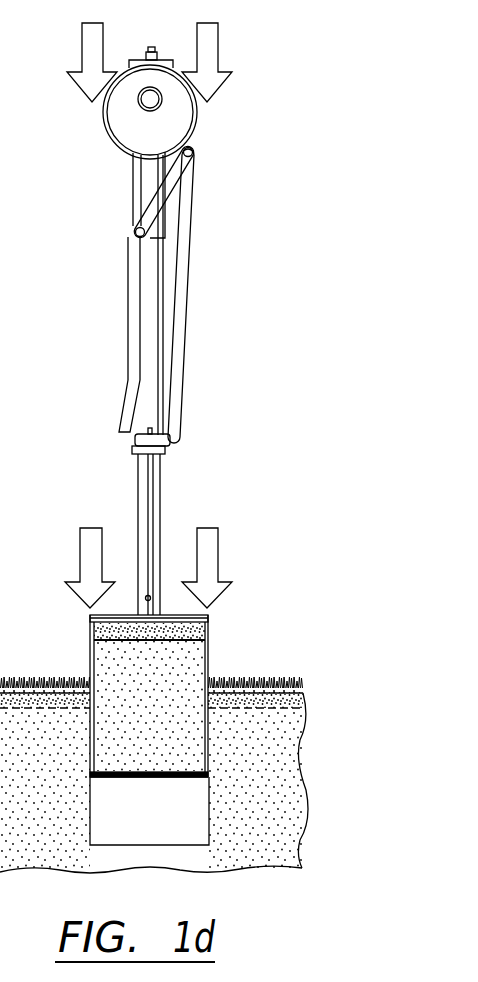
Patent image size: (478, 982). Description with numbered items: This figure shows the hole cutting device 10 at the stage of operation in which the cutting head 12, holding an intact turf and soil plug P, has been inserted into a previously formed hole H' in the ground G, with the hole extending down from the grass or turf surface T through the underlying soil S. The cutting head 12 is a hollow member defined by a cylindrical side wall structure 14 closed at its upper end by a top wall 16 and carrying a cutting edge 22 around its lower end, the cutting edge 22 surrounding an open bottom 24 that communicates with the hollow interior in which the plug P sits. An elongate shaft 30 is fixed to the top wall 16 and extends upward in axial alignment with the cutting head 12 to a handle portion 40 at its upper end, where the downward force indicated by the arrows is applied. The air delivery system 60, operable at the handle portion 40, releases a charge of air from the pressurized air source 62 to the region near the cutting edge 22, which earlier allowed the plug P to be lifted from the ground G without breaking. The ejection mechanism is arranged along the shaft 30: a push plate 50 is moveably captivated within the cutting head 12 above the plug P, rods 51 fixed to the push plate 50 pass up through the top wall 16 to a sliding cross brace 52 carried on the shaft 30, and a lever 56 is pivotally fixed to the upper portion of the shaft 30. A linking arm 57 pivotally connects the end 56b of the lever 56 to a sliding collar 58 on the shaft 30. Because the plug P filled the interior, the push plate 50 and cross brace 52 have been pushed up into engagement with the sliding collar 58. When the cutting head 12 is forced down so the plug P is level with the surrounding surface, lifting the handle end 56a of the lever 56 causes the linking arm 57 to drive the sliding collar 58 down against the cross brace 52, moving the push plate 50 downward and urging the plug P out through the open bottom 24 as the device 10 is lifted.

The hole cutting device 10 is at (262, 127).
The hollow cutting head 12 is at (215, 628).
The side wall structure 14 is at (90, 652).
The top wall 16 is at (180, 615).
The cutting edge 22 is at (110, 773).
The open bottom 24 is at (128, 773).
The elongate shaft 30 is at (150, 368).
The handle portion 40 is at (140, 113).
The push plate 50 is at (125, 630).
The rods 51 is at (148, 503).
The sliding cross brace 52 is at (160, 448).
The lever 56 is at (128, 300).
The handle end of the lever 56a is at (125, 405).
The end of the lever 56b is at (167, 183).
The linking arm 57 is at (182, 298).
The sliding collar 58 is at (135, 437).
The air delivery system 60 is at (197, 130).
The pressurized air source 62 is at (130, 143).
The plug P is at (170, 683).
The ground surface T is at (60, 702).
The ground G is at (300, 685).
The hole H' is at (225, 806).
The soil S is at (243, 808).